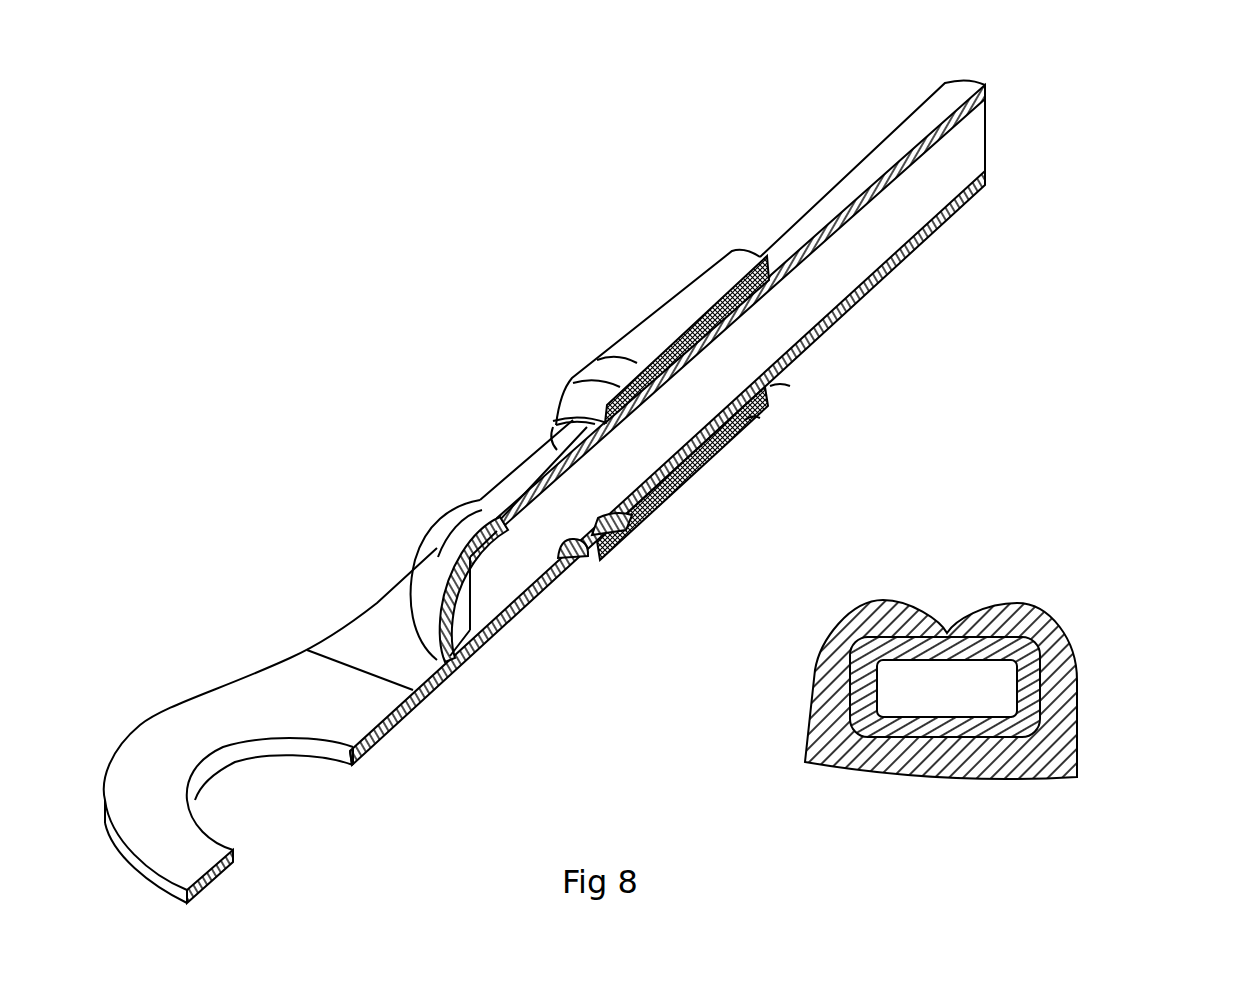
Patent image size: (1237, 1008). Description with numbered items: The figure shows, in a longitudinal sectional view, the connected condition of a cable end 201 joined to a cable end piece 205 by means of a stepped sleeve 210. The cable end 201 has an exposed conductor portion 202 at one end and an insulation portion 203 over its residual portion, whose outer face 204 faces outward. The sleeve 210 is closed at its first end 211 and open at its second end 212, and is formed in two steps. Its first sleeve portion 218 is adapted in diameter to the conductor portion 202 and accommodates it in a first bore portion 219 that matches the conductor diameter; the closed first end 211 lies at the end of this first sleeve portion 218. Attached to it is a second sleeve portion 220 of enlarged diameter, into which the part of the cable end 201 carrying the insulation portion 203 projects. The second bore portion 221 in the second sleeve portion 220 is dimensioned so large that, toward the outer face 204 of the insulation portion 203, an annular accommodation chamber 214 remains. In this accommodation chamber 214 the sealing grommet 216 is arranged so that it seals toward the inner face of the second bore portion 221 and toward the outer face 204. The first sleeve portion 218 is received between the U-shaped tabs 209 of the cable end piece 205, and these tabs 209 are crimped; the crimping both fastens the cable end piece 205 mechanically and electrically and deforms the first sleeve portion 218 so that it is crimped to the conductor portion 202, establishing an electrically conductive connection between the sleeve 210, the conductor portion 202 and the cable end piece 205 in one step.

The cable end 201 is at (817, 170).
The conductor portion 202 is at (553, 587).
The insulation portion 203 is at (887, 267).
The outer face 204 is at (947, 217).
The cable end piece 205 is at (174, 686).
The tabs 209 is at (493, 481).
The sleeve 210 is at (561, 362).
The first end 211 is at (455, 668).
The second end 212 is at (750, 420).
The accommodation chamber 214 is at (557, 418).
The sealing grommet 216 is at (762, 390).
The first sleeve portion 218 is at (460, 540).
The first bore portion 219 is at (587, 547).
The second sleeve portion 220 is at (667, 303).
The second bore portion 221 is at (712, 458).